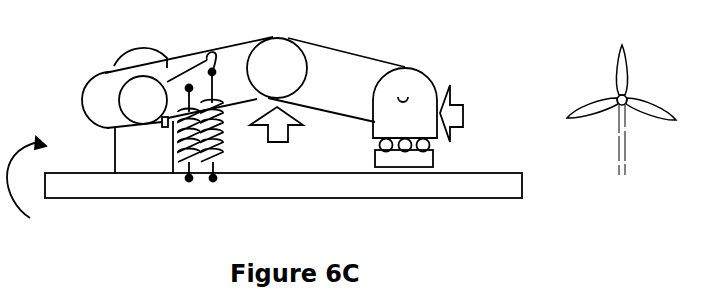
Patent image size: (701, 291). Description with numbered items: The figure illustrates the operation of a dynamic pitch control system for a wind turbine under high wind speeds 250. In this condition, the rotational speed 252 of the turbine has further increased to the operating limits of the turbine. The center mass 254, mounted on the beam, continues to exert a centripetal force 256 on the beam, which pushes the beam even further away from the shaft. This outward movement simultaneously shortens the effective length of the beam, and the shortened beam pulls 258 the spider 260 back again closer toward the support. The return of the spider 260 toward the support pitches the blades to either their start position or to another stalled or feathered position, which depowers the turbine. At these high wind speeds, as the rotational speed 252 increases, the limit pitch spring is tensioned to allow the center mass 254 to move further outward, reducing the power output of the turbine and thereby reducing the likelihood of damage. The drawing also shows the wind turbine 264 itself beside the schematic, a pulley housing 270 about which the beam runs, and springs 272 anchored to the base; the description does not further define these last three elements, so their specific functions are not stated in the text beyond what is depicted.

The high wind speeds 250 is at (283, 199).
The rotational speed 252 is at (23, 165).
The center mass 254 is at (305, 60).
The centripetal force 256 is at (292, 128).
The pull 258 is at (435, 105).
The spider 260 is at (437, 147).
The wind turbine 264 is at (621, 123).
The drive pulley housing 270 is at (167, 66).
The springs 272 is at (213, 185).